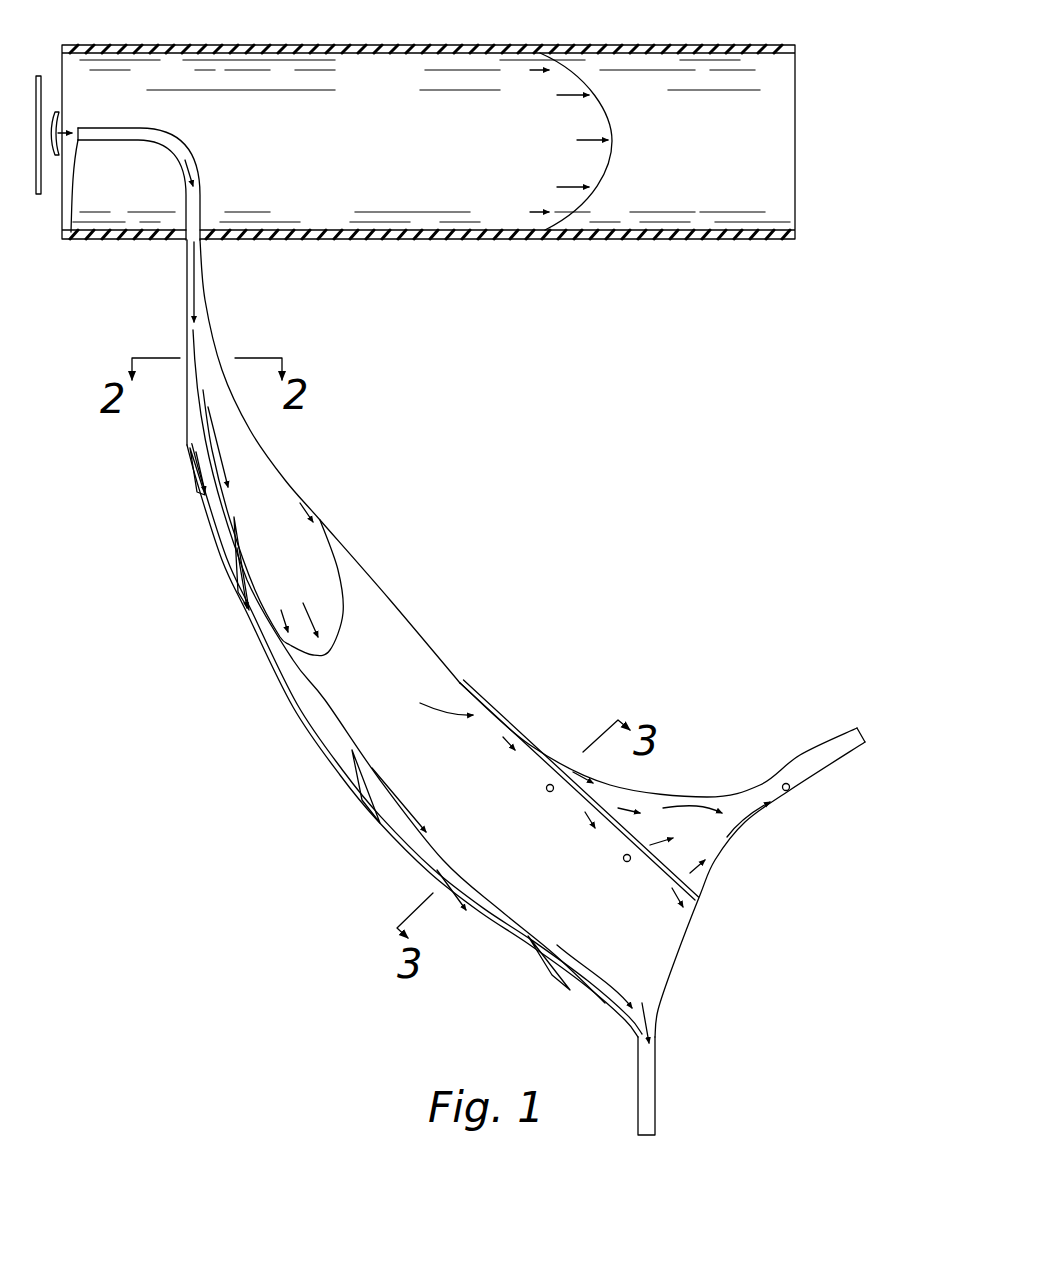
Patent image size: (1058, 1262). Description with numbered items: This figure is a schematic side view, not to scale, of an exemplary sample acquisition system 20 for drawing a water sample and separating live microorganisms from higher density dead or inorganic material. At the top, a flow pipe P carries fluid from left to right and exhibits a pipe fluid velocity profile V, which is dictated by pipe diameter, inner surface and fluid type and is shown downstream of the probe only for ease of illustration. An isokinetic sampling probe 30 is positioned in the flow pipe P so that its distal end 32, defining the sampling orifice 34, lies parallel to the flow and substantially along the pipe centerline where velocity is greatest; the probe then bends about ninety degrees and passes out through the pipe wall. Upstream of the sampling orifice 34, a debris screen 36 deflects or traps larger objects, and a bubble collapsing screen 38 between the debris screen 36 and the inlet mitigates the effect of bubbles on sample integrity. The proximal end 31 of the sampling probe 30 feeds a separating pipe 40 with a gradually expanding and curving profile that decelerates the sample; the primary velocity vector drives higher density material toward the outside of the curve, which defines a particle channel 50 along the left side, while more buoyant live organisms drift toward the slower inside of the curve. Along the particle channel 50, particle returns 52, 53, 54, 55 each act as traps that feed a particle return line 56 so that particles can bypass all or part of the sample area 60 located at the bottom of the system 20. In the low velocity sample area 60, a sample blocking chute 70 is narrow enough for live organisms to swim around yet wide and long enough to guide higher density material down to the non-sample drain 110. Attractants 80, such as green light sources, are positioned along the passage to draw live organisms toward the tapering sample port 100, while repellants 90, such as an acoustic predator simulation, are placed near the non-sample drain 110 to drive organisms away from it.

The sample acquisition system 20 is at (441, 573).
The sampling probe 30 is at (96, 160).
The proximal end 31 is at (180, 218).
The distal end 32 is at (88, 114).
The sampling orifice 34 is at (80, 230).
The debris screen 36 is at (37, 194).
The bubble collapsing screen 38 is at (56, 112).
The separating pipe 40 is at (333, 527).
The particle channel 50 is at (328, 704).
The particle return 52 is at (190, 450).
The particle return 53 is at (233, 540).
The particle return 54 is at (356, 792).
The particle return 55 is at (547, 965).
The particle return line 56 is at (280, 672).
The sample area 60 is at (488, 830).
The sample blocking chute 70 is at (615, 856).
The attractants 80 is at (550, 784).
The repellants 90 is at (639, 982).
The sample port 100 is at (779, 748).
The non-sample drain 110 is at (676, 1103).
The flow pipe P is at (507, 256).
The pipe fluid velocity profile V is at (622, 158).